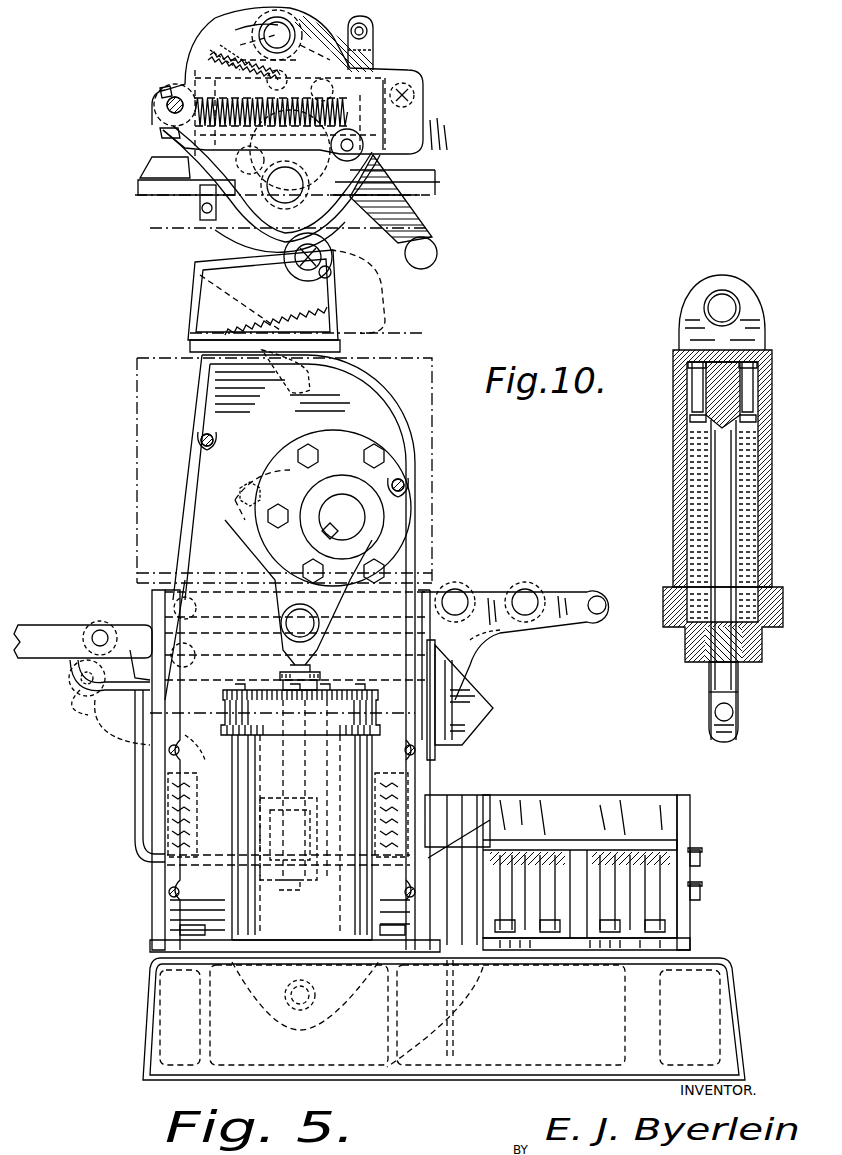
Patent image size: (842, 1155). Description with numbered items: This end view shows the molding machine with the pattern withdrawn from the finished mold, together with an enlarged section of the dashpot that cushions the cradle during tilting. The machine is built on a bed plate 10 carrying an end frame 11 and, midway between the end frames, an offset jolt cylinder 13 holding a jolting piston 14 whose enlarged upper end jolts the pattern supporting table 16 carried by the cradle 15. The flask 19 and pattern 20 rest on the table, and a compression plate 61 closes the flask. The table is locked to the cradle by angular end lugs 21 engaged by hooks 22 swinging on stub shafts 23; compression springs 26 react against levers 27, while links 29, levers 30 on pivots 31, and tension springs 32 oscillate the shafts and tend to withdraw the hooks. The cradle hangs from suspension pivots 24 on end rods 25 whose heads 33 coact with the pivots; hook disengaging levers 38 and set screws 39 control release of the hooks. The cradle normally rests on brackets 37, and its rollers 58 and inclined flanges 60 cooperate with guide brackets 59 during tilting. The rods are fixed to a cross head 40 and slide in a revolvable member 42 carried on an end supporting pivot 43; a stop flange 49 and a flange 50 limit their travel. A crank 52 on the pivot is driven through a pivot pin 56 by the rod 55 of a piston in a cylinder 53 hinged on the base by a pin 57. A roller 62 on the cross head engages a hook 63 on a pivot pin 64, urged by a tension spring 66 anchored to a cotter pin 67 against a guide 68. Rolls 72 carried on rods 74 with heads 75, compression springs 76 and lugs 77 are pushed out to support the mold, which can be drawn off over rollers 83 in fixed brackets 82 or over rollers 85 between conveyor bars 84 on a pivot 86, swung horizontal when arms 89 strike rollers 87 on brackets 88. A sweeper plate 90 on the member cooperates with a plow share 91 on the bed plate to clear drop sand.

The bed plate 10 is at (165, 1020).
The end frame 11 is at (160, 916).
The jolt cylinder 13 is at (640, 908).
The jolting piston 14 is at (646, 802).
The cradle 15 is at (150, 104).
The pattern supporting table 16 is at (150, 172).
The flask 19 is at (418, 450).
The pattern 20 is at (386, 306).
The angular end lugs 21 is at (238, 154).
The hooks 22 is at (190, 62).
The stub shafts 23 is at (282, 32).
The suspension pivots 24 is at (282, 200).
The end rods 25 is at (272, 441).
The compression springs 26 is at (210, 50).
The levers 27 is at (230, 28).
The links 29 is at (370, 34).
The levers 30 is at (375, 60).
The pivots 31 is at (418, 96).
The tension springs 32 is at (160, 90).
The heads 33 is at (238, 235).
The brackets 37 is at (473, 800).
The hook disengaging levers 38 is at (437, 258).
The set screws 39 is at (272, 105).
The cross head 40 is at (136, 856).
The revolvable member 42 is at (152, 598).
The end supporting pivot 43 is at (342, 517).
The stop flange 49 is at (135, 651).
The flange 50 is at (145, 688).
The crank 52 is at (280, 562).
The cylinder 53 is at (302, 820).
The rod 55 is at (320, 672).
The pivot pin 56 is at (290, 633).
The pin 57 is at (280, 1010).
The rollers 58 is at (360, 140).
The guide brackets 59 is at (494, 700).
The flanges 60 is at (450, 145).
The compression plate 61 is at (137, 577).
The roller 62 is at (252, 748).
The hook 63 is at (270, 378).
The pivot pin 64 is at (333, 256).
The tension spring 66 is at (278, 315).
The cotter pin 67 is at (331, 274).
The guide 68 is at (205, 293).
The rolls 72 is at (262, 600).
The rods 74 is at (204, 743).
The heads 75 is at (190, 860).
The compression springs 76 is at (255, 826).
The lugs 77 is at (200, 785).
The fixed brackets 82 is at (548, 620).
The rollers 83 is at (520, 578).
The conveyor bars 84 is at (38, 632).
The rollers 85 is at (96, 626).
The pivot 86 is at (195, 658).
The rollers 87 is at (70, 700).
The brackets 88 is at (108, 740).
The arms 89 is at (68, 668).
The sweeper plate 90 is at (452, 925).
The plow share 91 is at (462, 1014).